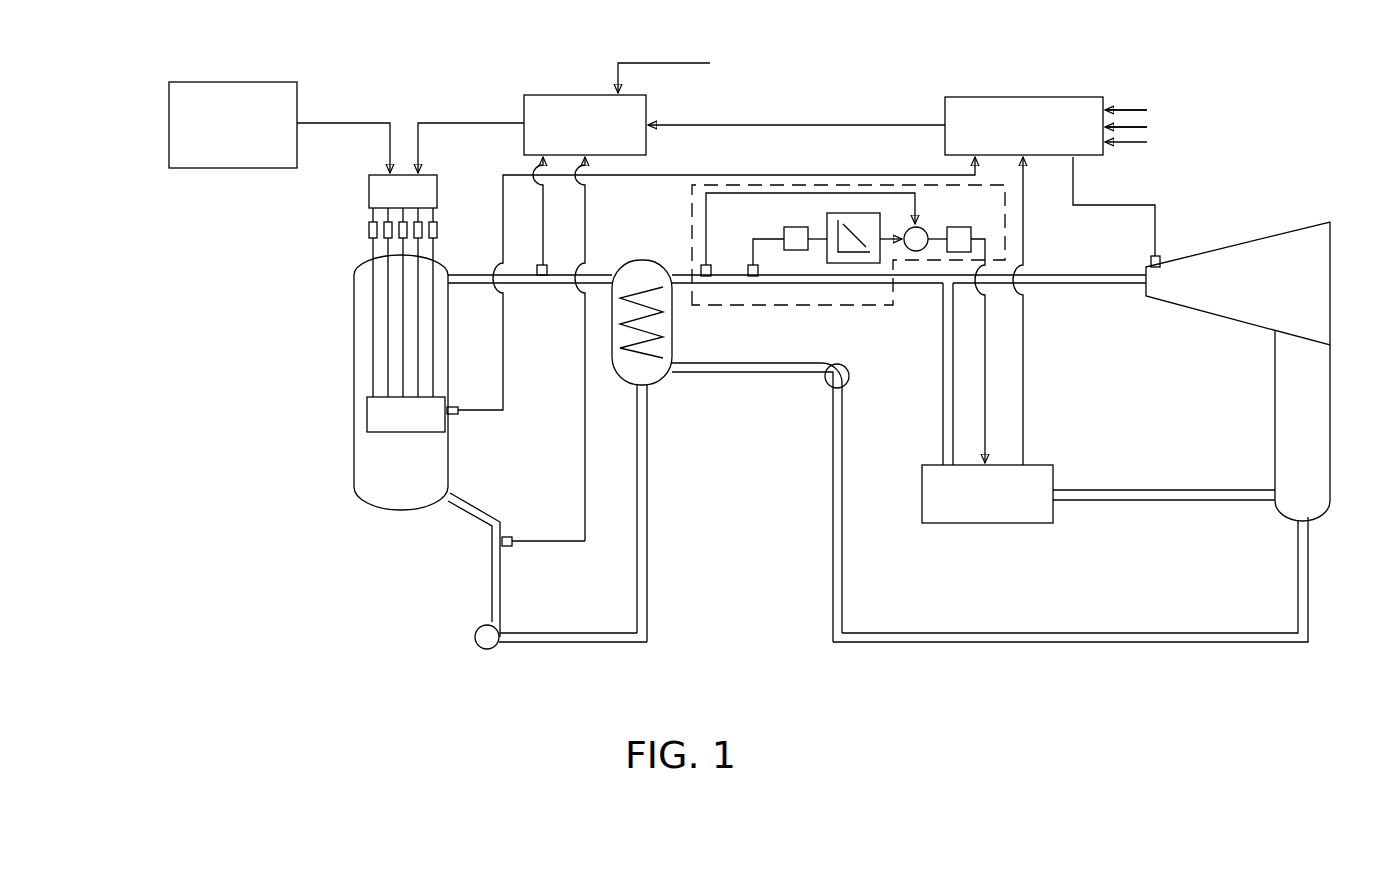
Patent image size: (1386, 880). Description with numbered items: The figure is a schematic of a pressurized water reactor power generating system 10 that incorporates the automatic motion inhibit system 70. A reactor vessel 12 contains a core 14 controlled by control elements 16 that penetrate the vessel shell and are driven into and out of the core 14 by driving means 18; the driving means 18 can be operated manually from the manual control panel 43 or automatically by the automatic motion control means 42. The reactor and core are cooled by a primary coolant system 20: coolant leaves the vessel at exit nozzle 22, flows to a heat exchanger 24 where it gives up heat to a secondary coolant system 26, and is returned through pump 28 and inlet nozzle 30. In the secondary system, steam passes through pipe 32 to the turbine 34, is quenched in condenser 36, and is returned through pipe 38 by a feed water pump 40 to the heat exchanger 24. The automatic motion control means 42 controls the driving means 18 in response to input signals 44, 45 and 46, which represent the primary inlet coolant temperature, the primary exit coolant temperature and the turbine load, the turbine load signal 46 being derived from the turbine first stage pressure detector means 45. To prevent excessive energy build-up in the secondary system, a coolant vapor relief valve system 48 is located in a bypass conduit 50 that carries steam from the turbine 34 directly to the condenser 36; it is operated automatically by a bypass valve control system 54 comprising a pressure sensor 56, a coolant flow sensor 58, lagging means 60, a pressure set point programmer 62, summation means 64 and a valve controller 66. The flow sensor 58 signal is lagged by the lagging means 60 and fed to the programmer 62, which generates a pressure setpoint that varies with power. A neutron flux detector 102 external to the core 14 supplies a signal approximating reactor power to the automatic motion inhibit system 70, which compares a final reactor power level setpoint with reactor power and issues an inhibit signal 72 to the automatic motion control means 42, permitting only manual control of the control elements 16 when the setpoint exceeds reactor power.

The nuclear power generating system 10 is at (1250, 197).
The reactor vessel 12 is at (352, 429).
The core 14 is at (405, 433).
The control elements 16 is at (386, 293).
The driving means 18 is at (369, 190).
The primary coolant system 20 is at (535, 353).
The exit nozzle 22 is at (456, 275).
The heat exchanger 24 is at (660, 388).
The secondary coolant system 26 is at (806, 337).
The pump 28 is at (474, 636).
The inlet nozzle 30 is at (453, 500).
The pipe 32 is at (918, 292).
The turbine 34 is at (1333, 262).
The condenser 36 is at (1275, 432).
The pipe 38 is at (920, 633).
The feed water pump 40 is at (850, 384).
The automatic motion control means 42 is at (560, 95).
The manual control panel 43 is at (297, 120).
The input signal 44 is at (585, 485).
The first stage pressure detector means 45 is at (545, 230).
The turbine load signal 46 is at (656, 63).
The coolant vapor relief valve system 48 is at (1040, 465).
The bypass conduit 50 is at (943, 412).
The bypass valve control system 54 is at (742, 310).
The pressure sensor 56 is at (711, 270).
The coolant flow sensor 58 is at (758, 270).
The lagging means 60 is at (784, 232).
The pressure set point programmer 62 is at (827, 222).
The summation means 64 is at (918, 228).
The valve controller 66 is at (958, 228).
The automatic motion inhibit system 70 is at (994, 97).
The automatic motion inhibit signal 72 is at (925, 124).
The neutron flux detector 102 is at (457, 415).